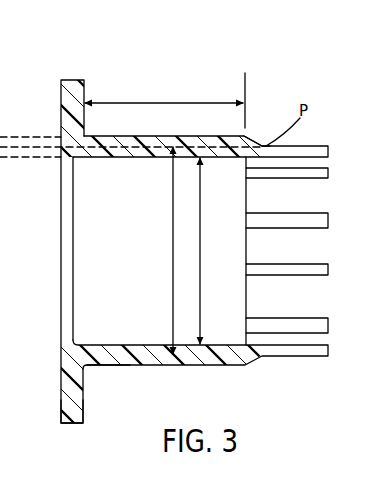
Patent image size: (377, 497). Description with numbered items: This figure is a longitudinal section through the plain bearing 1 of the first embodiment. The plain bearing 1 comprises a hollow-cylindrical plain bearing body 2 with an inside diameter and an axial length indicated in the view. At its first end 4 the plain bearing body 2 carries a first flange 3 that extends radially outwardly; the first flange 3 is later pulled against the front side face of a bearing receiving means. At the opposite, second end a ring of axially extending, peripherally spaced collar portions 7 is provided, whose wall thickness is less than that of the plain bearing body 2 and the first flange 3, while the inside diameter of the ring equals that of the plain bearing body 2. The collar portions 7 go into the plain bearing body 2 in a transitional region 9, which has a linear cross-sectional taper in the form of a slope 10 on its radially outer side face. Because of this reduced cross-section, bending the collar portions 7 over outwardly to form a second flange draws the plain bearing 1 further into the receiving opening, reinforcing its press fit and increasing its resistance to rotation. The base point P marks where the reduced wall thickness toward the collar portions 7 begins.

The plain bearing 1 is at (222, 74).
The plain bearing body 2 is at (83, 282).
The first flange 3 is at (82, 420).
The first end 4 is at (88, 366).
The collar portions 7 is at (330, 145).
The transitional region 9 is at (264, 147).
The slope 10 is at (262, 147).